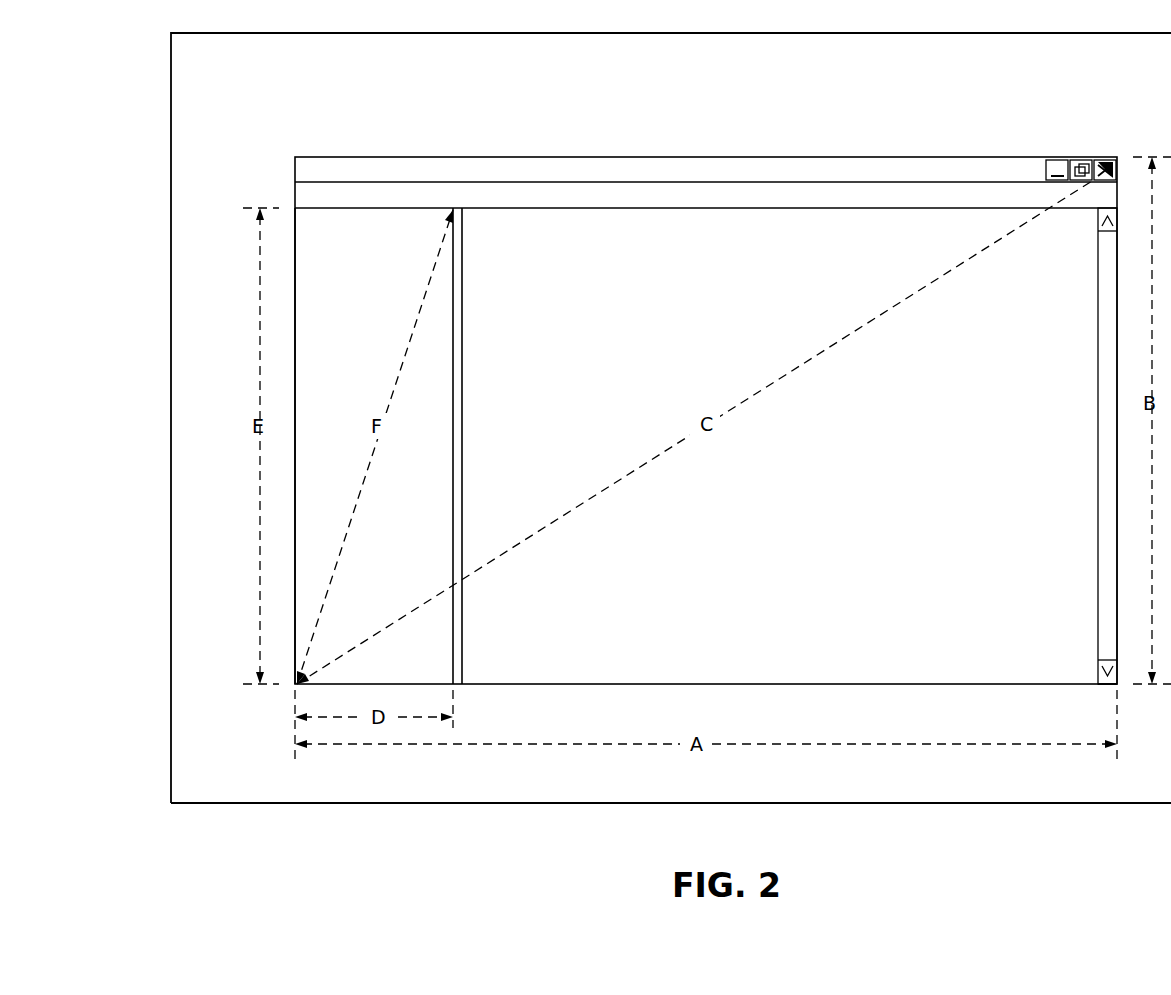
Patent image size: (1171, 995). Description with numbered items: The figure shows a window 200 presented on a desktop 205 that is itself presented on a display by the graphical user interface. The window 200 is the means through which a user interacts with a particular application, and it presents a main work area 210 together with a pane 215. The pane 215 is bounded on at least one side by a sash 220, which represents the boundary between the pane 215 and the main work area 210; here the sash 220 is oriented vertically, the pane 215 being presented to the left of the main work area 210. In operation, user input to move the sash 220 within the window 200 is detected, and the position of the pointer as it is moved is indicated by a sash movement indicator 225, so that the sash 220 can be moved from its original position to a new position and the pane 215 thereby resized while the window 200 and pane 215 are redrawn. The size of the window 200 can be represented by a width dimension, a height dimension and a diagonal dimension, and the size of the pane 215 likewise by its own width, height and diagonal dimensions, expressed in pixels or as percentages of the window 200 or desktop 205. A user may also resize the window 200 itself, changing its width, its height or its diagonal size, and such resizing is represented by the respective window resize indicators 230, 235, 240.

The desktop 205 is at (171, 103).
The window 200 is at (294, 186).
The window resize indicator 235 is at (714, 173).
The pane 215 is at (374, 446).
The main work area 210 is at (780, 446).
The sash 220 is at (462, 478).
The sash movement indicator 225 is at (443, 383).
The window resize indicator 230 is at (282, 322).
The window resize indicator 240 is at (1122, 688).